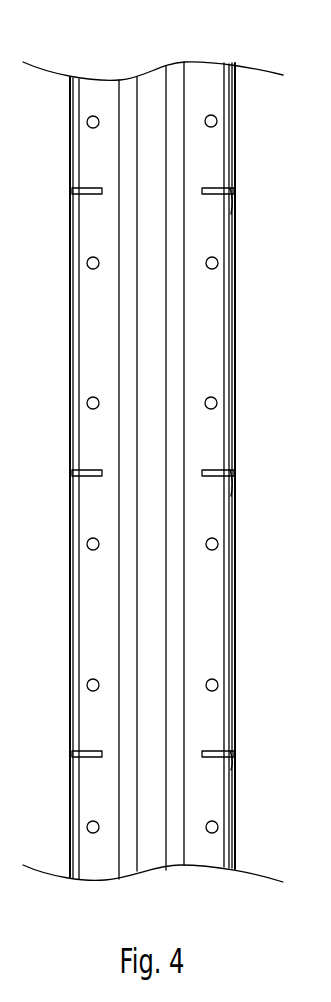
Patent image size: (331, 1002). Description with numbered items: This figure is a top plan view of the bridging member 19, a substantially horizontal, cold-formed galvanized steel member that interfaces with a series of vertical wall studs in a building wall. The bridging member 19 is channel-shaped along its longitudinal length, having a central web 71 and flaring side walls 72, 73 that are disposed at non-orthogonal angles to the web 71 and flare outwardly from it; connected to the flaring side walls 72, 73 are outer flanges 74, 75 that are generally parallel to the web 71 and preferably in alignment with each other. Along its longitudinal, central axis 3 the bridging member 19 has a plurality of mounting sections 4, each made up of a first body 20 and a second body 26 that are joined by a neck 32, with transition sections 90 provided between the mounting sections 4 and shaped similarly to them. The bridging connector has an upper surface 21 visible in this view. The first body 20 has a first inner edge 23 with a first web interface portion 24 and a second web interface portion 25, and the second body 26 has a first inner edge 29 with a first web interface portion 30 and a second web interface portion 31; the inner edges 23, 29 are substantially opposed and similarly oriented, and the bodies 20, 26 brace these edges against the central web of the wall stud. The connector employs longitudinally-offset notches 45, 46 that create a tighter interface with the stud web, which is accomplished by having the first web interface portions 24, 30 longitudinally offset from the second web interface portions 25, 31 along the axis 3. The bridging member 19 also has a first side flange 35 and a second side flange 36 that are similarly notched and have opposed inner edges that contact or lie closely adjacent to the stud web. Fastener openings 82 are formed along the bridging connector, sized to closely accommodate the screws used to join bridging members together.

The longitudinal central axis 3 is at (152, 53).
The mounting section 4 is at (237, 174).
The bridging member 19 is at (236, 588).
The first body 20 is at (89, 207).
The upper surface 21 is at (217, 147).
The first inner edge 23 is at (82, 201).
The first web interface portion 24 is at (97, 195).
The second web interface portion 25 is at (190, 498).
The second body 26 is at (90, 182).
The first inner edge 29 is at (82, 188).
The first web interface portion 30 is at (91, 189).
The second web interface portion 31 is at (204, 212).
The neck 32 is at (148, 192).
The first side flange 35 is at (70, 462).
The second side flange 36 is at (233, 437).
The notch 45 is at (68, 191).
The notch 46 is at (236, 190).
The web 71 is at (155, 604).
The flaring side wall 72 is at (130, 622).
The flaring side wall 73 is at (173, 627).
The outer flange 74 is at (88, 368).
The outer flange 75 is at (212, 356).
The fastener opening 82 is at (90, 266).
The transition section 90 is at (214, 88).